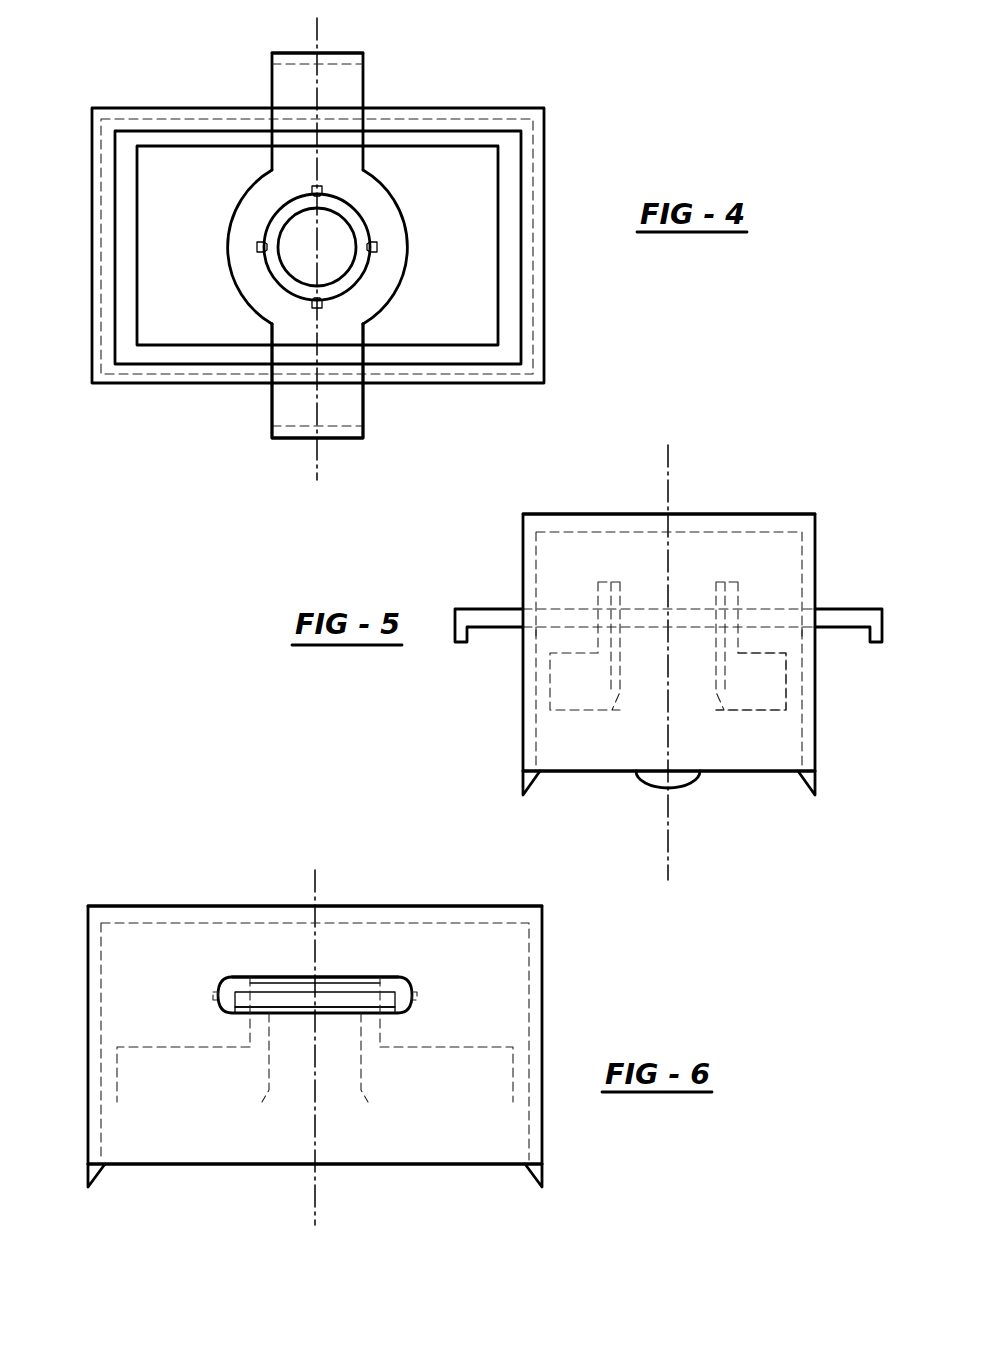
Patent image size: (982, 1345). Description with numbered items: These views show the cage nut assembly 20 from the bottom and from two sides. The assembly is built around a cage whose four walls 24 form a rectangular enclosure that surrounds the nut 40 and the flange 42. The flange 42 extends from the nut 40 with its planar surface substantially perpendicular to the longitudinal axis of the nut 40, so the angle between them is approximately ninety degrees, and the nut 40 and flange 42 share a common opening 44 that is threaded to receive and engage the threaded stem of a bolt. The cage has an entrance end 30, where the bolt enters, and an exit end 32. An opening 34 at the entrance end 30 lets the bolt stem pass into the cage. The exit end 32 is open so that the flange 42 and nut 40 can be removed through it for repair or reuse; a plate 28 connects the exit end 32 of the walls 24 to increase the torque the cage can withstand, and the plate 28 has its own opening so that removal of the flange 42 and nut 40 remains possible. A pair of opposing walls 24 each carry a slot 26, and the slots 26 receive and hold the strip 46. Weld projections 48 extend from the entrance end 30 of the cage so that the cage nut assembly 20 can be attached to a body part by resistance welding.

In FIG. 4, the cage nut assembly 20 is at (123, 432).
In FIG. 5, the cage nut assembly 20 is at (835, 746).
In FIG. 6, the cage nut assembly 20 is at (78, 832).
In FIG. 4, the walls 24 is at (205, 108).
In FIG. 5, the walls 24 is at (523, 680).
In FIG. 6, the walls 24 is at (88, 968).
In FIG. 4, the slots 26 is at (368, 108).
In FIG. 5, the slots 26 is at (525, 603).
In FIG. 6, the slots 26 is at (395, 977).
In FIG. 4, the plate 28 is at (442, 130).
In FIG. 5, the plate 28 is at (546, 517).
In FIG. 6, the plate 28 is at (105, 906).
In FIG. 5, the entrance end 30 is at (728, 755).
In FIG. 6, the entrance end 30 is at (402, 1145).
In FIG. 4, the exit end 32 is at (191, 297).
In FIG. 5, the exit end 32 is at (693, 555).
In FIG. 6, the exit end 32 is at (236, 940).
In FIG. 5, the opening 34 is at (640, 730).
In FIG. 6, the opening 34 is at (294, 1100).
In FIG. 4, the nut 40 is at (280, 210).
In FIG. 5, the nut 40 is at (735, 633).
In FIG. 6, the nut 40 is at (380, 1022).
In FIG. 4, the flange 42 is at (137, 177).
In FIG. 5, the flange 42 is at (788, 685).
In FIG. 6, the flange 42 is at (512, 1075).
In FIG. 4, the common opening 44 is at (306, 262).
In FIG. 4, the strip 46 is at (271, 410).
In FIG. 5, the strip 46 is at (495, 627).
In FIG. 6, the strip 46 is at (293, 1003).
In FIG. 5, the weld projections 48 is at (522, 783).
In FIG. 6, the weld projections 48 is at (88, 1178).